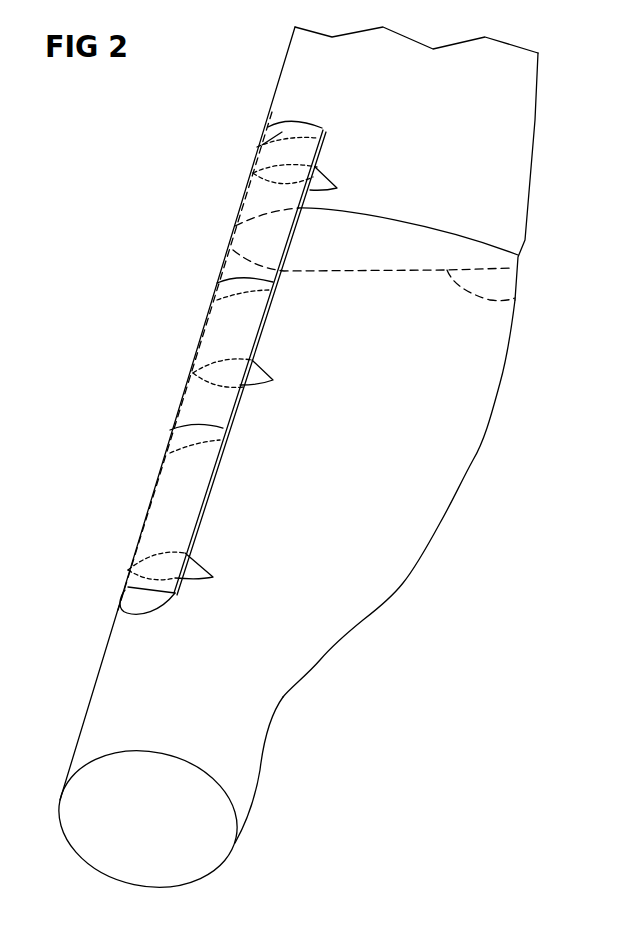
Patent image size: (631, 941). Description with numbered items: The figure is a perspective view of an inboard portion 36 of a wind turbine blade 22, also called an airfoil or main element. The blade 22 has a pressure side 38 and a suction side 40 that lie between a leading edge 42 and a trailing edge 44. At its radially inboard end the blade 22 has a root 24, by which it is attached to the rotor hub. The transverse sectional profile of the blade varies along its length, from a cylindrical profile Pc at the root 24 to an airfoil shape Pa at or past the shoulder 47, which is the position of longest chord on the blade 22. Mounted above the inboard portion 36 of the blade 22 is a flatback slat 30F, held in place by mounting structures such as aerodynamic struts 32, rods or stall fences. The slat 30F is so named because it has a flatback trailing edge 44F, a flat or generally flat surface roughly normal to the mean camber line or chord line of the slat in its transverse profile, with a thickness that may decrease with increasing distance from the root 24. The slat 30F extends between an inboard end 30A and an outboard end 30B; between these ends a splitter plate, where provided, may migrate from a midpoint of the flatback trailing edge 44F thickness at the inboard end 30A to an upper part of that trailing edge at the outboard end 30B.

The blade 22 is at (349, 431).
The root 24 is at (243, 780).
The inboard end of the slat 30A is at (128, 568).
The outboard end of the slat 30B is at (262, 145).
The flatback slat 30F is at (183, 473).
The aerodynamic struts 32 is at (325, 184).
The inboard portion 36 is at (478, 573).
The pressure side 38 is at (515, 300).
The suction side 40 is at (453, 233).
The leading edge 42 is at (286, 52).
The trailing edge 44 is at (539, 79).
The flatback trailing edge 44F is at (201, 508).
The shoulder 47 is at (503, 383).
The airfoil shape Pa is at (416, 224).
The cylindrical profile Pc is at (147, 750).